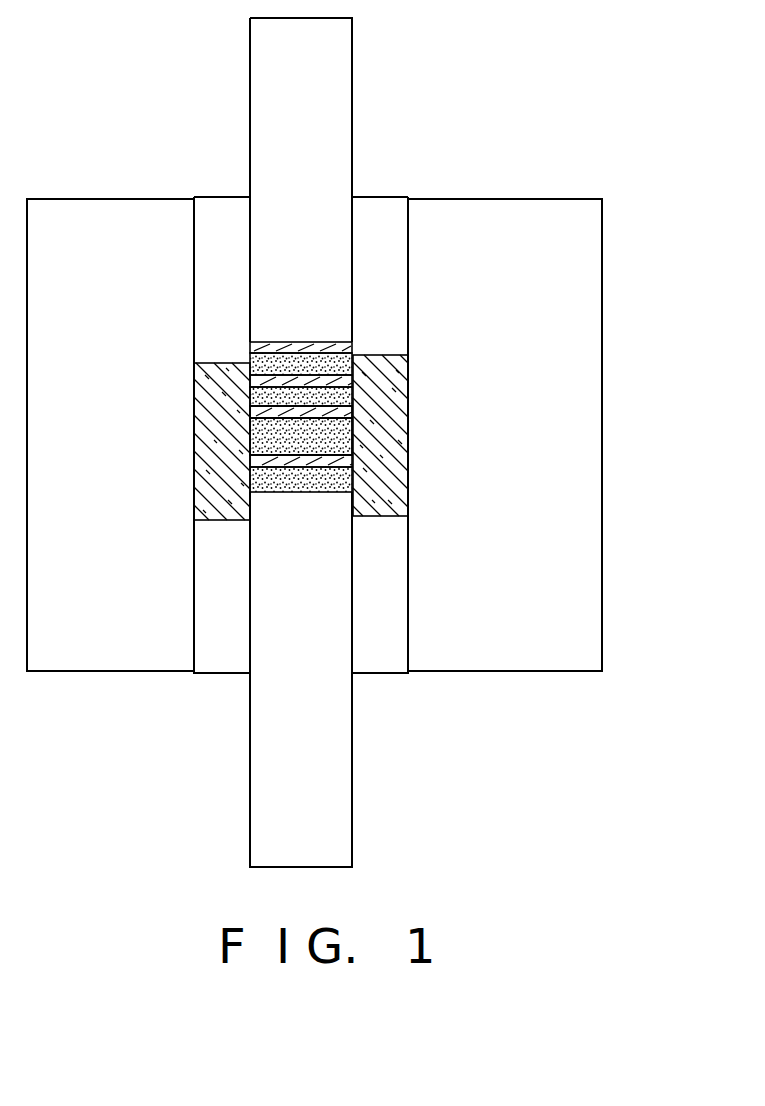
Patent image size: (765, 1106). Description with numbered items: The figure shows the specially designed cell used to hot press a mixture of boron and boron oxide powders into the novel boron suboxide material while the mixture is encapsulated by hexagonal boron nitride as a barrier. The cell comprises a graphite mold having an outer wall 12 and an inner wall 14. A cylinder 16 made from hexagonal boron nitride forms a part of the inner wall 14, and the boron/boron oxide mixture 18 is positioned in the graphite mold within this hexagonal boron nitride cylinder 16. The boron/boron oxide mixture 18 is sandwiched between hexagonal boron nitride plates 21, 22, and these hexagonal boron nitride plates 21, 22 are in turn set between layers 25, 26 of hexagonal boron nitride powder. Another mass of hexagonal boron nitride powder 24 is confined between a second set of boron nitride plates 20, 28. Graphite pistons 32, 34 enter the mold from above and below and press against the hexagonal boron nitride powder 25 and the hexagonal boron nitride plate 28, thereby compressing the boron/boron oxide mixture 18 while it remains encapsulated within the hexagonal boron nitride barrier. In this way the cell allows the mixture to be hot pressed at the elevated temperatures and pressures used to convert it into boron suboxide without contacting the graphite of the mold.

The outer wall 12 is at (587, 418).
The inner wall 14 is at (393, 295).
The cylinder 16 is at (353, 420).
The boron/boron oxide mixture 18 is at (353, 445).
The boron nitride plate 20 is at (353, 386).
The hexagonal boron nitride plate 21 is at (355, 405).
The hexagonal boron nitride plate 22 is at (353, 470).
The hexagonal boron nitride powder 24 is at (258, 362).
The layer of hexagonal boron nitride powder 25 is at (250, 483).
The layer of hexagonal boron nitride powder 26 is at (250, 397).
The hexagonal boron nitride plate 28 is at (332, 343).
The graphite piston 32 is at (333, 88).
The graphite piston 34 is at (343, 760).